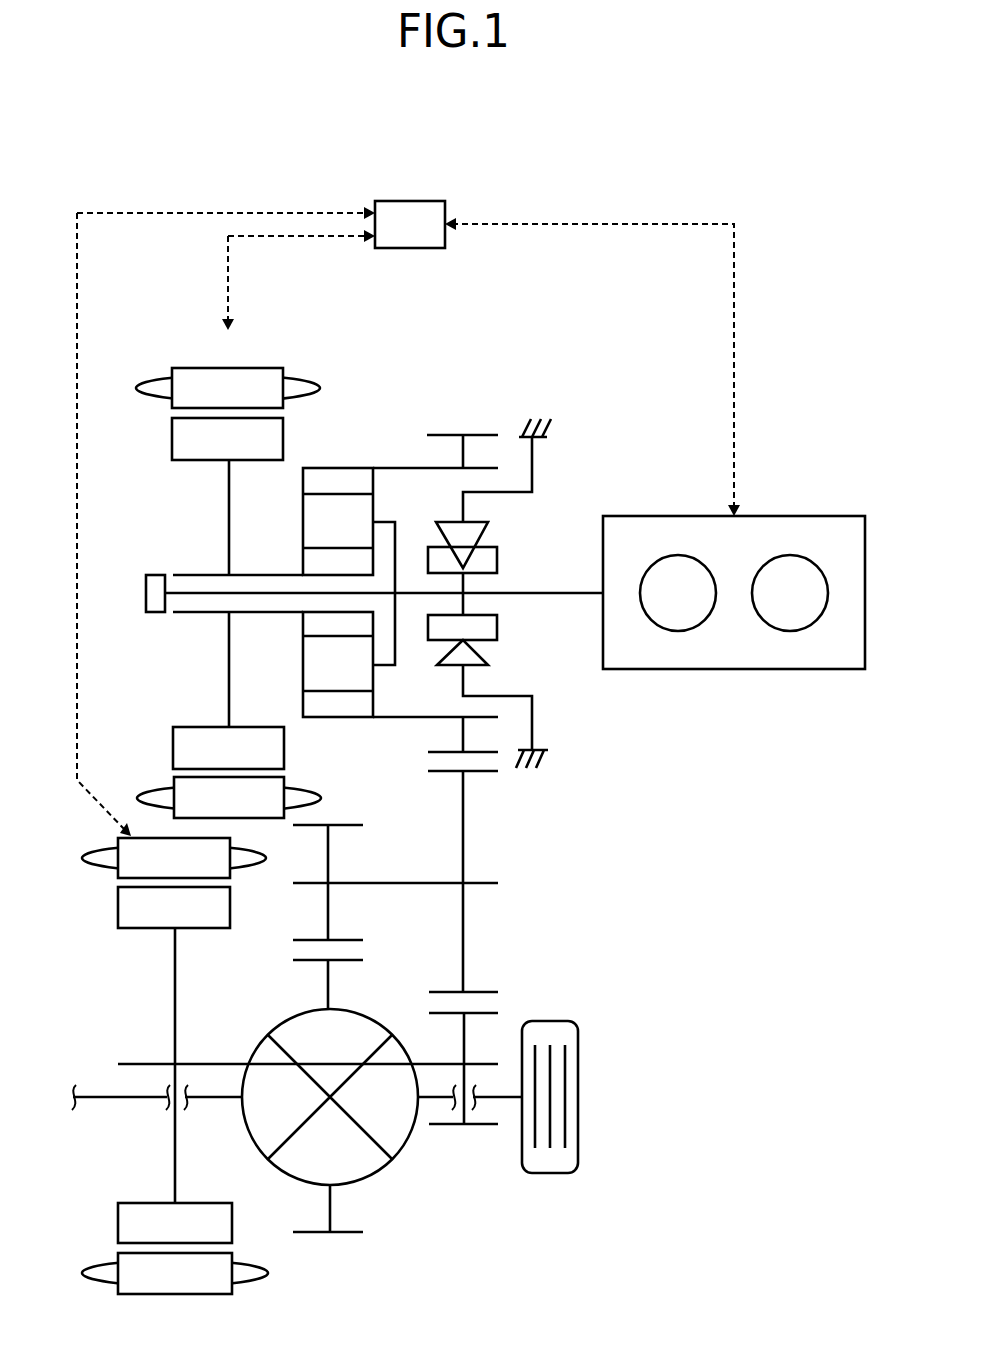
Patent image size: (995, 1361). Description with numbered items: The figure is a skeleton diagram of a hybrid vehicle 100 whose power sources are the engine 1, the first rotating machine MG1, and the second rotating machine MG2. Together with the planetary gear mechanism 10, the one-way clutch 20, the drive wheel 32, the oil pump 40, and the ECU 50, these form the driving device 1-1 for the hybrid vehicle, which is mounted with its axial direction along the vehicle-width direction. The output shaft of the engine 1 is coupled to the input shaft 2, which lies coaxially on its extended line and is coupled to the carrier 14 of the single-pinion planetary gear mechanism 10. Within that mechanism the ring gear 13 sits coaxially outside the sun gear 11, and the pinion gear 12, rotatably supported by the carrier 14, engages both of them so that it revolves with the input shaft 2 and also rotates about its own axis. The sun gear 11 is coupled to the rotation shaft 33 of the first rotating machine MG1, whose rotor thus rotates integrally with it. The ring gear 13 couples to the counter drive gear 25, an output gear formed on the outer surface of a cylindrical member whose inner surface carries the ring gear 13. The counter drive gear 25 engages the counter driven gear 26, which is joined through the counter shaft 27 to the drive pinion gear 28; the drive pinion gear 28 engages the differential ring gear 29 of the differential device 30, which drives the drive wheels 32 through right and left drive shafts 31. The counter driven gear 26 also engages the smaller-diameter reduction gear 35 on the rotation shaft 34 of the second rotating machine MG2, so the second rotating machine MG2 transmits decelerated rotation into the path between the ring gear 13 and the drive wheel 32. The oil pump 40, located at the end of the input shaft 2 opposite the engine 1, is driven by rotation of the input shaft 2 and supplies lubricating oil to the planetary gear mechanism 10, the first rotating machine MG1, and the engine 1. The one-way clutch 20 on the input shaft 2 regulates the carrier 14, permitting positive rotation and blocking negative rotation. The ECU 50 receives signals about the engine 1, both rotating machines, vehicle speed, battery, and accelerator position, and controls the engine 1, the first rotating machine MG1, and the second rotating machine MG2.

The engine 1 is at (787, 516).
The driving device for a hybrid vehicle 1-1 is at (435, 360).
The input shaft 2 is at (555, 593).
The planetary gear mechanism 10 is at (352, 440).
The sun gear 11 is at (303, 557).
The pinion gear 12 is at (303, 521).
The ring gear 13 is at (303, 481).
The carrier 14 is at (398, 534).
The one-way clutch 20 is at (507, 535).
The counter drive gear 25 is at (430, 753).
The counter driven gear 26 is at (480, 763).
The counter shaft 27 is at (403, 882).
The drive pinion gear 28 is at (365, 940).
The differential ring gear 29 is at (303, 957).
The differential device 30 is at (383, 1017).
The drive shaft 31 is at (211, 1100).
The drive wheel 32 is at (578, 1133).
The rotation shaft 33 is at (198, 575).
The rotation shaft 34 is at (203, 1063).
The reduction gear 35 is at (480, 1008).
The oil pump 40 is at (153, 575).
The ECU 50 is at (409, 201).
The vehicle 100 is at (85, 193).
The first rotating machine MG1 is at (228, 576).
The second rotating machine MG2 is at (175, 1083).